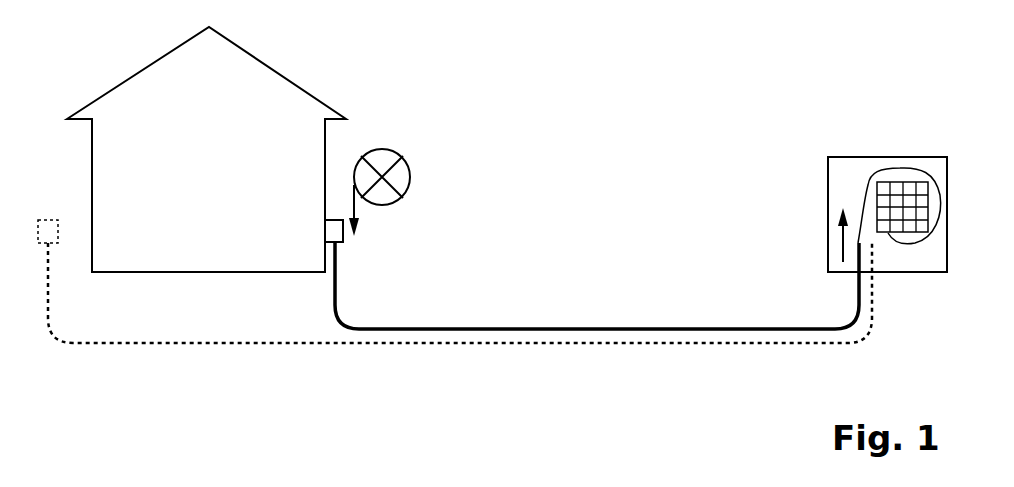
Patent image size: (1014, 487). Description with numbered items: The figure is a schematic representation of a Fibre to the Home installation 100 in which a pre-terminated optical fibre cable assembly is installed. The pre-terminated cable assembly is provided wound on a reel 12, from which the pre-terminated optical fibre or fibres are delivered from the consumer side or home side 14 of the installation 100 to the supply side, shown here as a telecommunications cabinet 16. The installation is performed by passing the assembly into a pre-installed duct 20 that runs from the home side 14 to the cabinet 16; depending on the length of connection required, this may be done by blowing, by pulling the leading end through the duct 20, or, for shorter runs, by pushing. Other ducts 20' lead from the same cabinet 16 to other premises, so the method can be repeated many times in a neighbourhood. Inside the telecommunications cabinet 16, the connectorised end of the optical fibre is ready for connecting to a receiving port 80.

The Fibre to the Home installation 100 is at (588, 128).
The consumer side/home side 14 is at (280, 62).
The reel 12 is at (402, 150).
The telecommunications cabinet 16 is at (888, 135).
The pre-installed duct 20 is at (597, 285).
The other duct 20' is at (455, 310).
The receiving port 80 is at (912, 208).